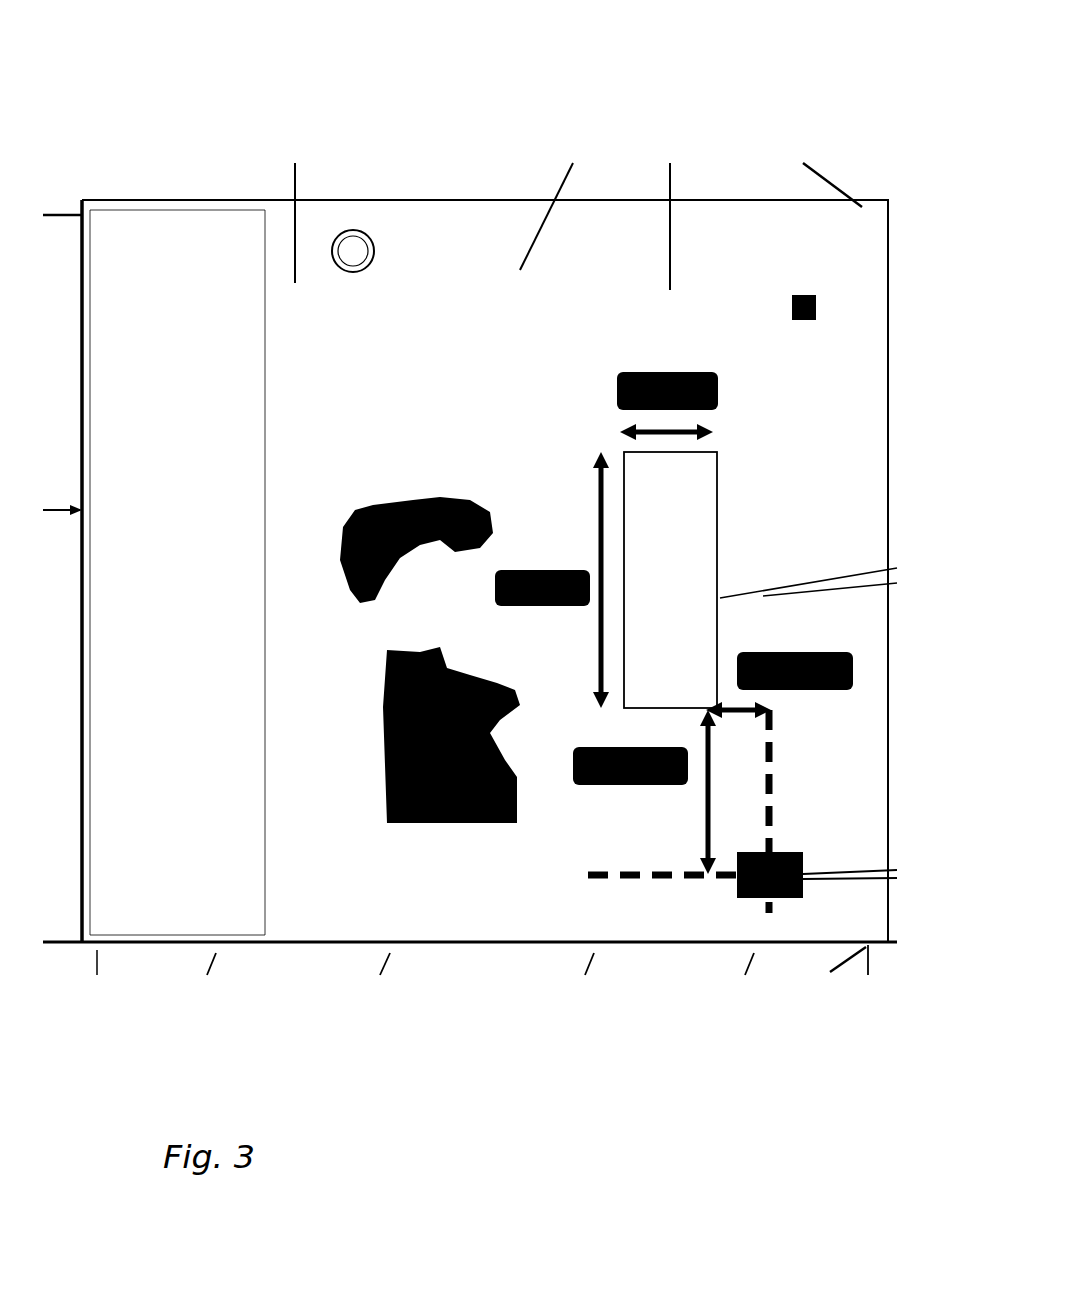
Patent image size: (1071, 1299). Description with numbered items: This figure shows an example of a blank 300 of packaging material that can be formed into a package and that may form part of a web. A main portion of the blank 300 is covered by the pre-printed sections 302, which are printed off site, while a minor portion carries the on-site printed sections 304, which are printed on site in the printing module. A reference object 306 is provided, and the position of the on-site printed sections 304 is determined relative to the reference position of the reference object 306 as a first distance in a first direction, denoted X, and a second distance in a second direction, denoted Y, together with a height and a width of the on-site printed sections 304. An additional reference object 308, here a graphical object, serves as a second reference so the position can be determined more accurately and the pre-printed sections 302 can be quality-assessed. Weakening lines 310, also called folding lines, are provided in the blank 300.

The blank 300 is at (641, 103).
The pre-printed sections 302 is at (428, 783).
The on-site printed sections 304 is at (688, 540).
The reference object 306 is at (754, 878).
The additional reference object 308 is at (352, 246).
The weakening lines 310 is at (223, 770).